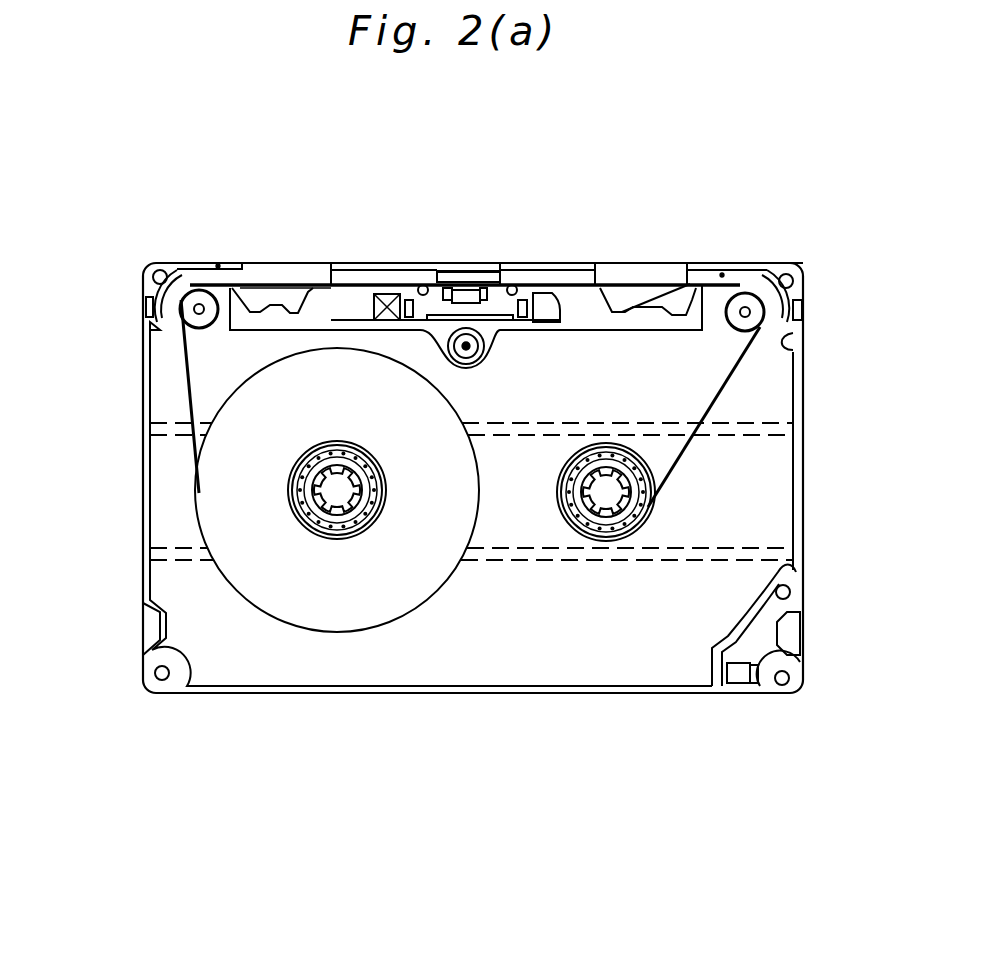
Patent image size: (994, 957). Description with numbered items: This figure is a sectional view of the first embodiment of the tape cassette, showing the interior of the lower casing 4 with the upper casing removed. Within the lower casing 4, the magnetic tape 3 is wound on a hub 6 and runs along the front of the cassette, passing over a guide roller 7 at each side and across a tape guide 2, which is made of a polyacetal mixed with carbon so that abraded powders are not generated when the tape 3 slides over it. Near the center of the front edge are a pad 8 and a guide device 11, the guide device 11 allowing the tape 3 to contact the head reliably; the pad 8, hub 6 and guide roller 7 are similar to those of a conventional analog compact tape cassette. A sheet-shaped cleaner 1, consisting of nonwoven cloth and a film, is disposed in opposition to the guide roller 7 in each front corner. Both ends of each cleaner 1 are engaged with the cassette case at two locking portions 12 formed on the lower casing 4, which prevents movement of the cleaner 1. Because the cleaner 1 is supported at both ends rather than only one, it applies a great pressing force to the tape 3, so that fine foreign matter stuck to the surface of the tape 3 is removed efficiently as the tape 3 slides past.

The sheet-shaped cleaner 1 is at (185, 262).
The tape guide 2 is at (297, 322).
The magnetic tape 3 is at (677, 465).
The lower casing 4 is at (803, 405).
The hub 6 is at (317, 552).
The guide roller 7 is at (202, 318).
The pad 8 is at (458, 280).
The guide device 11 is at (507, 282).
The locking portion 12 is at (218, 262).